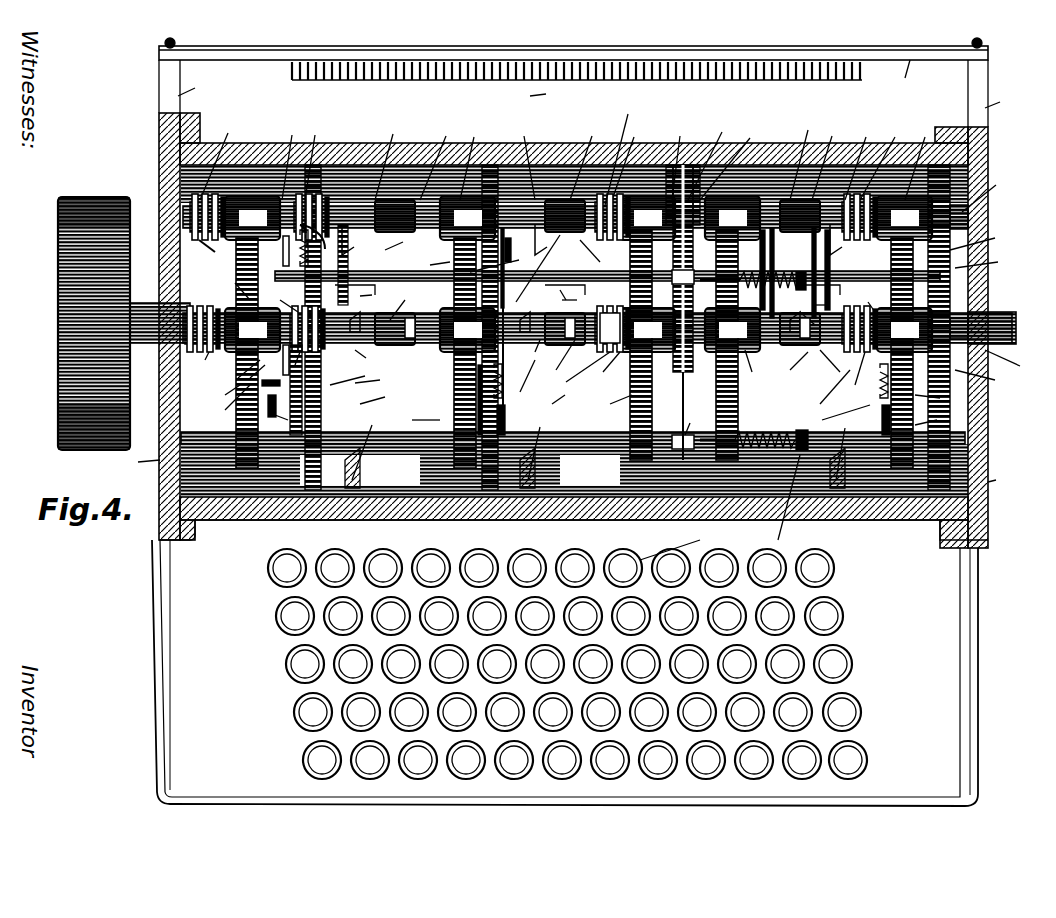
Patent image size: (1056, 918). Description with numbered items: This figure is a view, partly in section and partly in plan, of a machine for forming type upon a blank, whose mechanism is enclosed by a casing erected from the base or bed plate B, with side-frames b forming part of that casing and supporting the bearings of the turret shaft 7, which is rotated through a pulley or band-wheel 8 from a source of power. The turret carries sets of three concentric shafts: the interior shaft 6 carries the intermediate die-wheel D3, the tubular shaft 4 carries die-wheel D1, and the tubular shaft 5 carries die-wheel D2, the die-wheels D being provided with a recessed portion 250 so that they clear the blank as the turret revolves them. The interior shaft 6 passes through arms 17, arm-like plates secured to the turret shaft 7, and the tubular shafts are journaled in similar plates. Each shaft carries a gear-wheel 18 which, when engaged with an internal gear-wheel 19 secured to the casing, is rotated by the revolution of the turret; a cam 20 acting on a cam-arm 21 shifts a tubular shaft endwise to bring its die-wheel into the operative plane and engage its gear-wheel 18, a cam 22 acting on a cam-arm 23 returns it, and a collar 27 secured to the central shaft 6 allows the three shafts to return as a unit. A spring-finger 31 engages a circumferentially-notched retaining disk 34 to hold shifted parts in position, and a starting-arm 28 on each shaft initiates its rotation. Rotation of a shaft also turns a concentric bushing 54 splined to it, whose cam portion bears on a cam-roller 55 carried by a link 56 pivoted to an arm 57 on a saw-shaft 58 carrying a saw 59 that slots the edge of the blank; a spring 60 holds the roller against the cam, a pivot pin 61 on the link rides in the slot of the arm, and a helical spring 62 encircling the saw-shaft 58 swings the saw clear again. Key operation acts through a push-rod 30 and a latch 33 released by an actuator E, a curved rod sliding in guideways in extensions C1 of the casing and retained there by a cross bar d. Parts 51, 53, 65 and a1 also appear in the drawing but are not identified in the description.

The tubular shaft 4 is at (505, 304).
The tubular shaft 5 is at (799, 249).
The interior shaft 6 is at (965, 228).
The turret shaft 7 is at (215, 310).
The pulley or band-wheel 8 is at (100, 200).
The arms 17 is at (583, 349).
The gear-wheel 18 is at (661, 327).
The internal gear-wheel 19 is at (625, 390).
The cam 20 is at (591, 297).
The cam-arm 21 is at (603, 249).
The cam 22 is at (601, 449).
The cam-arm 23 is at (609, 240).
The collar 27 is at (996, 273).
The starting-arm 28 is at (604, 239).
The push-rod 30 is at (471, 400).
The spring-finger 31 is at (535, 268).
The latch 33 is at (596, 341).
The retaining disk 34 is at (545, 257).
The stop 51 is at (573, 345).
The lever arm 53 is at (531, 333).
The concentric bushing 54 is at (590, 266).
The cam-roller 55 is at (578, 274).
The link 56 is at (534, 329).
The arm 57 is at (693, 420).
The saw-shaft 58 is at (340, 272).
The saw 59 is at (682, 365).
The spring 60 is at (609, 328).
The pivot pin 61 is at (508, 253).
The helical spring 62 is at (735, 395).
The gear hub 65 is at (360, 218).
The recessed portion 250 is at (615, 352).
The bed plate B is at (567, 651).
The casing extensions C1 is at (599, 91).
The die-wheel D is at (647, 289).
The die-wheel D1 is at (671, 261).
The die-wheel D2 is at (726, 268).
The die-wheel D3 is at (699, 267).
The actuator E is at (545, 91).
The top plate a1 is at (905, 78).
The side-frames b is at (567, 472).
The cross bar d is at (730, 287).